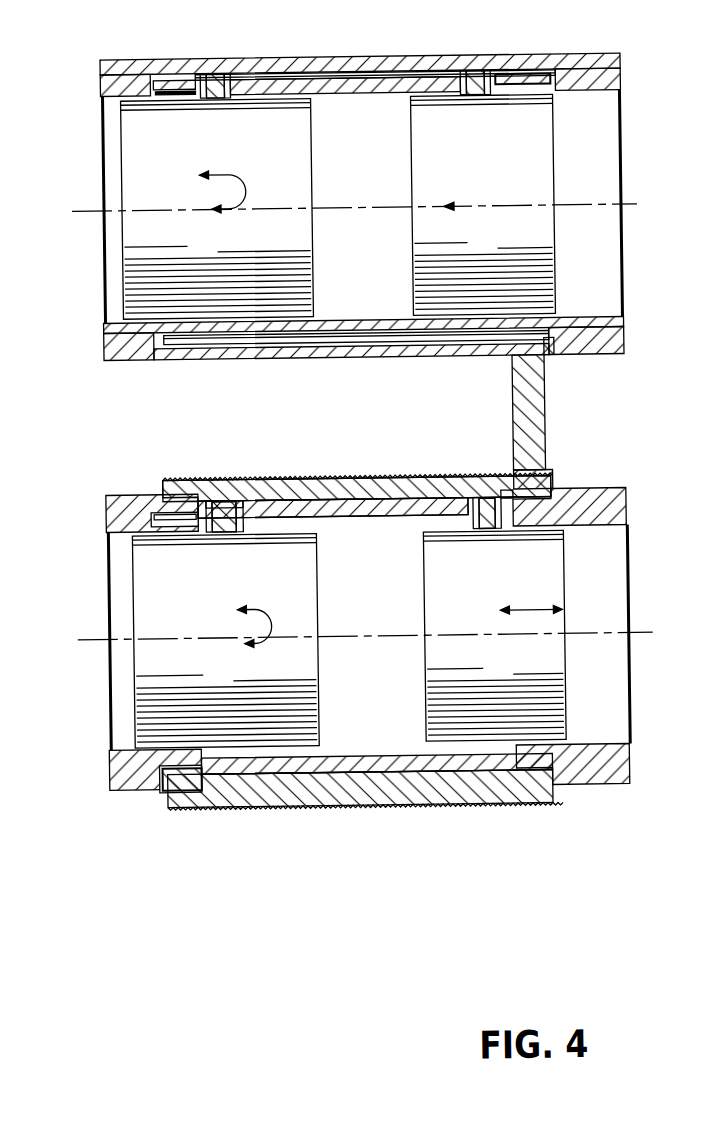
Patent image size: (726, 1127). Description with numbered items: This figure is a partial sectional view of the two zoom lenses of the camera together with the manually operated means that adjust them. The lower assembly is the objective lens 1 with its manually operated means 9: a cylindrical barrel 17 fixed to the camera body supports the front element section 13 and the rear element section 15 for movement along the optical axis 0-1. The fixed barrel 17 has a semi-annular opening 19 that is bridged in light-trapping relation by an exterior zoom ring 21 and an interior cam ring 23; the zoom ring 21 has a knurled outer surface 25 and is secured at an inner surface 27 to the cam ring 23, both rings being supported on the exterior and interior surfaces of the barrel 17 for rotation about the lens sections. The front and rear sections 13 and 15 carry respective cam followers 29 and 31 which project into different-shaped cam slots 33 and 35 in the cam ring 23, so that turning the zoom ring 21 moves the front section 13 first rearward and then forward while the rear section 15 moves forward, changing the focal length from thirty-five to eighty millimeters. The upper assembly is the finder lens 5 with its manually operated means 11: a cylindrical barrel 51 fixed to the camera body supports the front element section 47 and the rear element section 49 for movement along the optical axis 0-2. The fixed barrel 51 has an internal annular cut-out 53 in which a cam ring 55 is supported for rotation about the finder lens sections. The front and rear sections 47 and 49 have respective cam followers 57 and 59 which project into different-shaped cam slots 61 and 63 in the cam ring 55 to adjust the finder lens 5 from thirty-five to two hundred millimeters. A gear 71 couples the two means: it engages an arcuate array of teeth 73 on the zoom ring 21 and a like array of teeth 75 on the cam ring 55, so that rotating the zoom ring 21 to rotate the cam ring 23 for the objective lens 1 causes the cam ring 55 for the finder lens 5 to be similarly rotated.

The objective lens 1 is at (374, 639).
The finder lens 5 is at (344, 201).
The manually operated means 9 is at (367, 625).
The manually operated means 11 is at (103, 75).
The front element section 13 is at (316, 560).
The rear element section 15 is at (424, 615).
The cylindrical barrel 17 is at (106, 520).
The semi-annular opening 19 is at (325, 522).
The zoom ring 21 is at (410, 492).
The cam ring 23 is at (388, 508).
The knurled outer surface 25 is at (452, 477).
The inner surface 27 is at (364, 505).
The cam follower 29 is at (226, 532).
The cam follower 31 is at (492, 535).
The cam slot 33 is at (235, 500).
The cam slot 35 is at (502, 500).
The front element section 47 is at (316, 122).
The rear element section 49 is at (416, 172).
The cylindrical barrel 51 is at (627, 64).
The annular cut-out 53 is at (347, 88).
The cam ring 55 is at (400, 80).
The cam follower 57 is at (214, 97).
The cam follower 59 is at (490, 97).
The cam slot 61 is at (217, 77).
The cam slot 63 is at (496, 76).
The gear 71 is at (546, 420).
The arcuate array of teeth 73 is at (553, 476).
The array of teeth 75 is at (548, 357).
The optical axis 0-1 is at (640, 636).
The optical axis 0-2 is at (78, 184).